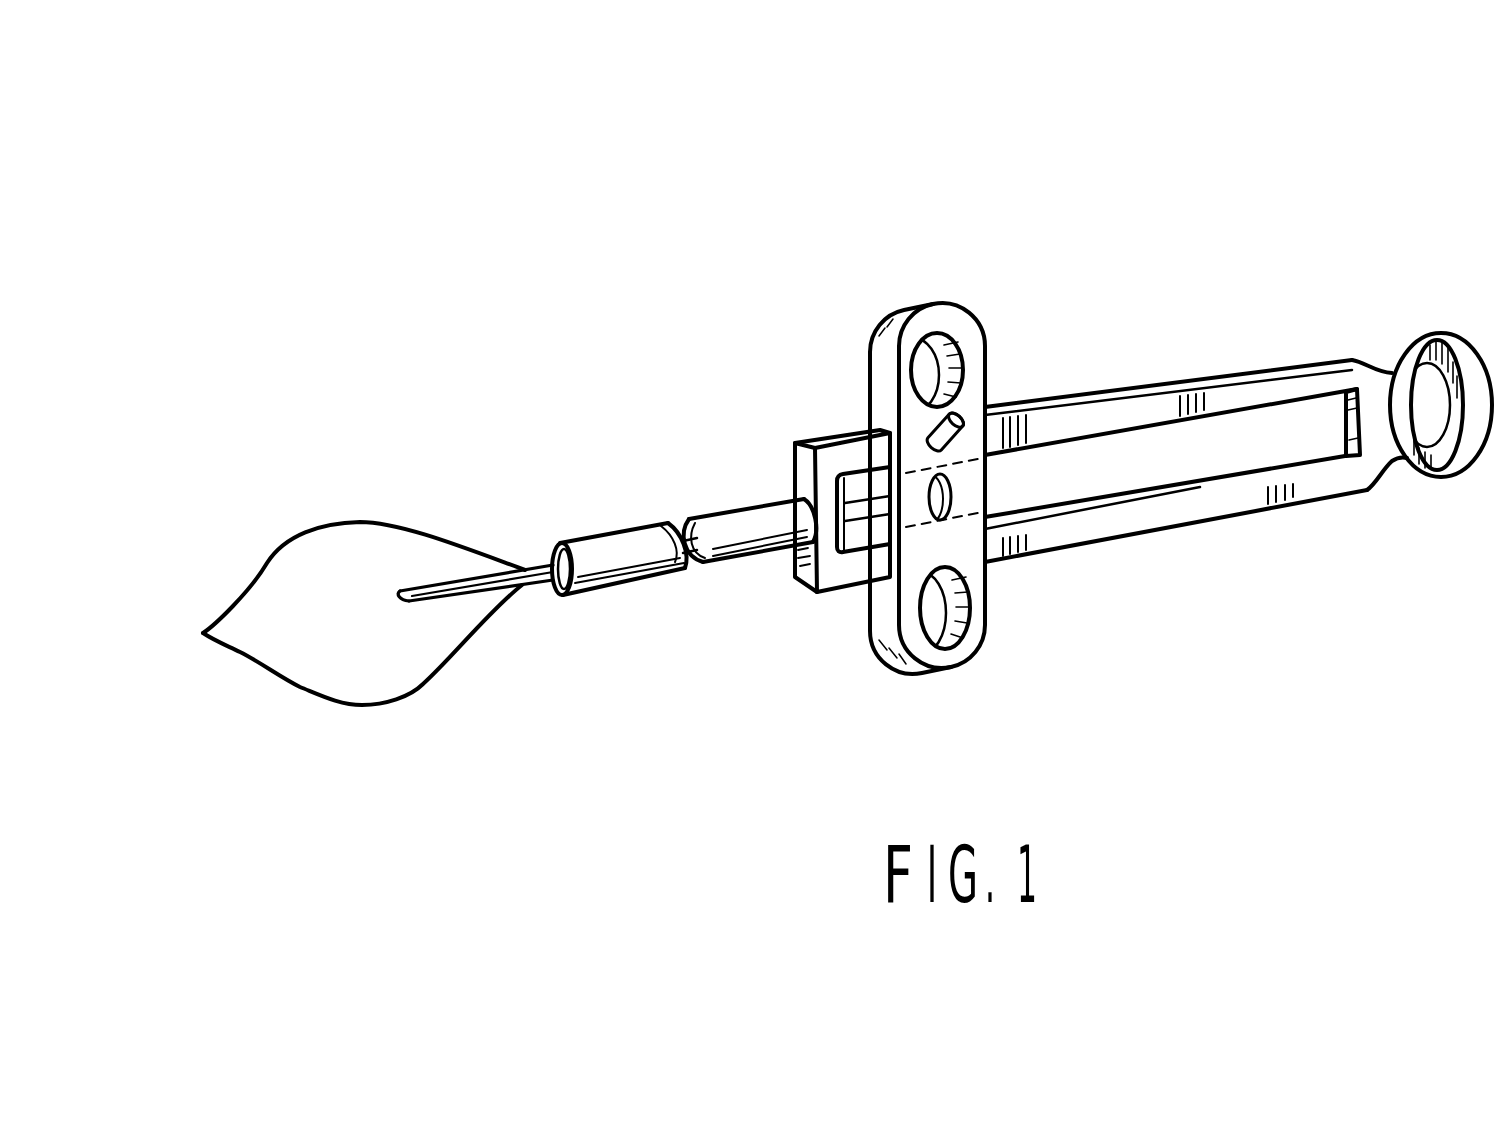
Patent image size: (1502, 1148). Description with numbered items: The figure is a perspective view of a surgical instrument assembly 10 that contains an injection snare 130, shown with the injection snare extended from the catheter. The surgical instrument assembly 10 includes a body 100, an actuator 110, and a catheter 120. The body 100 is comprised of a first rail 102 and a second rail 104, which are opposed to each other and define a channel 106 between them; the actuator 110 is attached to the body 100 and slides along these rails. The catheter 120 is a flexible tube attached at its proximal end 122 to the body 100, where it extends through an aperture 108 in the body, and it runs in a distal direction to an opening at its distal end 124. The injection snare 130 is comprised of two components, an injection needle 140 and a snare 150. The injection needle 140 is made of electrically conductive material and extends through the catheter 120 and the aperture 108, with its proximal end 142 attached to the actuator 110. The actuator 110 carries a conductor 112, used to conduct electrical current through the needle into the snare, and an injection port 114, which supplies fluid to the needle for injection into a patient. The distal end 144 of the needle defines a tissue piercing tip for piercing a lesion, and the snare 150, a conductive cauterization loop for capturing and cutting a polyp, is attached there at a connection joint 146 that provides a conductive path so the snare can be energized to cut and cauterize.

The surgical instrument assembly 10 is at (1247, 275).
The body 100 is at (1290, 364).
The first rail 102 is at (1152, 385).
The second rail 104 is at (1185, 525).
The channel 106 is at (1297, 433).
The aperture 108 is at (785, 491).
The actuator 110 is at (917, 298).
The conductor 112 is at (960, 418).
The injection port 114 is at (957, 508).
The catheter 120 is at (632, 555).
The proximal end of catheter 122 is at (786, 560).
The distal end of catheter 124 is at (546, 599).
The injection snare 130 is at (346, 486).
The injection needle 140 is at (537, 566).
The proximal end of injection needle 142 is at (857, 472).
The distal end of injection needle 144 is at (395, 596).
The connection joint 146 is at (520, 569).
The snare 150 is at (267, 563).